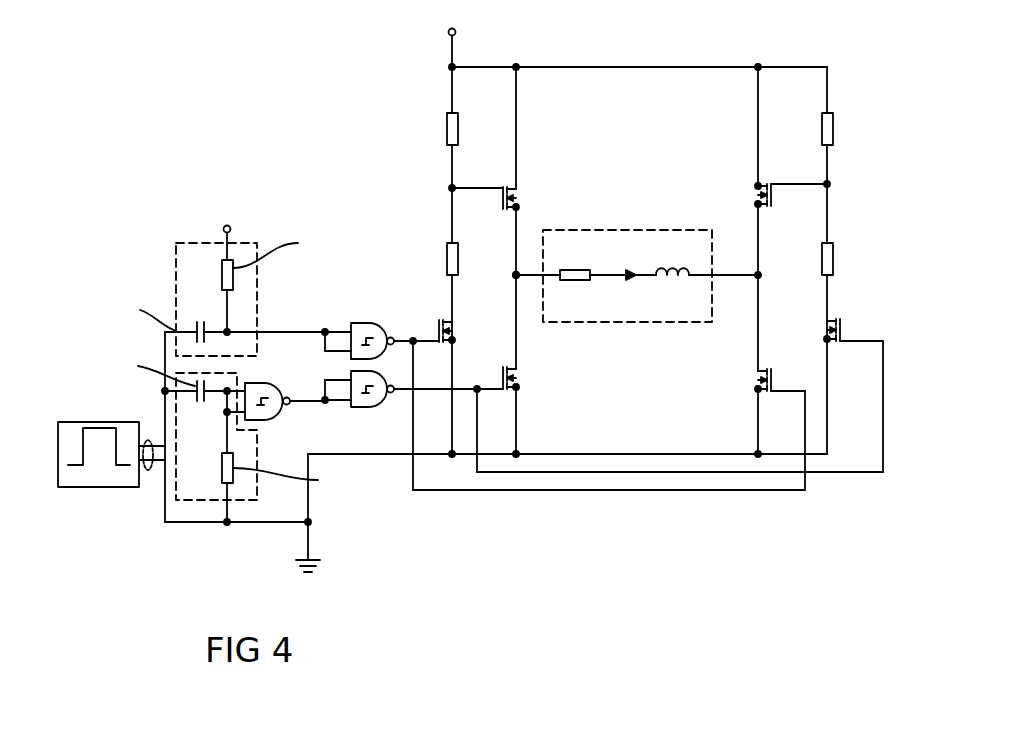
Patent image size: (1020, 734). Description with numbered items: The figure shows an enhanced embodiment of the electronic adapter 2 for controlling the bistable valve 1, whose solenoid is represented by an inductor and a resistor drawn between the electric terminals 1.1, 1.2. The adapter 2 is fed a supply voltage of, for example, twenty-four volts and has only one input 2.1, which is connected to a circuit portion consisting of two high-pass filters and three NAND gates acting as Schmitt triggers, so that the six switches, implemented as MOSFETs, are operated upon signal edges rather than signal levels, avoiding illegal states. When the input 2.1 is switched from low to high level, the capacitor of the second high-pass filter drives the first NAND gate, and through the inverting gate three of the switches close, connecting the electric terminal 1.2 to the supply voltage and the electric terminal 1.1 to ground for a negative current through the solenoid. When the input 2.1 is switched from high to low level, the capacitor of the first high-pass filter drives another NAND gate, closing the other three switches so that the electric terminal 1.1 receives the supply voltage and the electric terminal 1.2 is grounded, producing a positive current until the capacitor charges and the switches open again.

The bistable valve 1 is at (592, 230).
The electric terminal 1.1 is at (518, 278).
The electric terminal 1.2 is at (756, 280).
The electronic adapter 2 is at (311, 56).
The input 2.1 is at (147, 470).